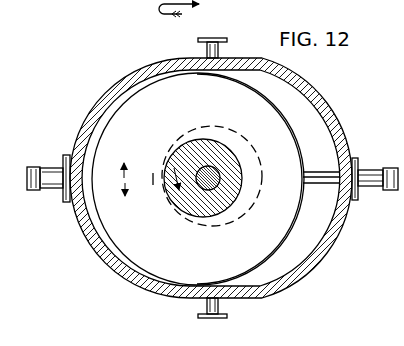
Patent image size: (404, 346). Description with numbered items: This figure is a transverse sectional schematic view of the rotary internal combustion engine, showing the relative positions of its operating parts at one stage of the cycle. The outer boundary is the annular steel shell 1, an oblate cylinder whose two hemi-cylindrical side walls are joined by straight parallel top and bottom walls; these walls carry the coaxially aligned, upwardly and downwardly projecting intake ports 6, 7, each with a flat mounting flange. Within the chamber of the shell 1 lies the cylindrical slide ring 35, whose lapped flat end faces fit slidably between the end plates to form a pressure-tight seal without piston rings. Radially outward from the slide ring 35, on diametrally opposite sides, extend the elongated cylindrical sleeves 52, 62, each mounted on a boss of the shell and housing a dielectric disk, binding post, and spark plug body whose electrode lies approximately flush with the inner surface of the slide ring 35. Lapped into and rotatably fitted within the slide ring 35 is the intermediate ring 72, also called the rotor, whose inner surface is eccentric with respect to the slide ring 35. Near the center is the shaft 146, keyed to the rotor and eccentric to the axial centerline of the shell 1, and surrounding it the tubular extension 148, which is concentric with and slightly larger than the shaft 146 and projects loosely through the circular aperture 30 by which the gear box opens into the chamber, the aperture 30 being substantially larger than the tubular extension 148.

The shell 1 is at (102, 99).
The intake port 6 is at (221, 38).
The intake port 7 is at (206, 315).
The circular aperture 30 is at (258, 204).
The slide ring 35 is at (299, 133).
The sleeve 52 is at (52, 167).
The sleeve 62 is at (374, 192).
The intermediate ring 72 is at (146, 102).
The shaft 146 is at (210, 172).
The tubular extension 148 is at (200, 146).